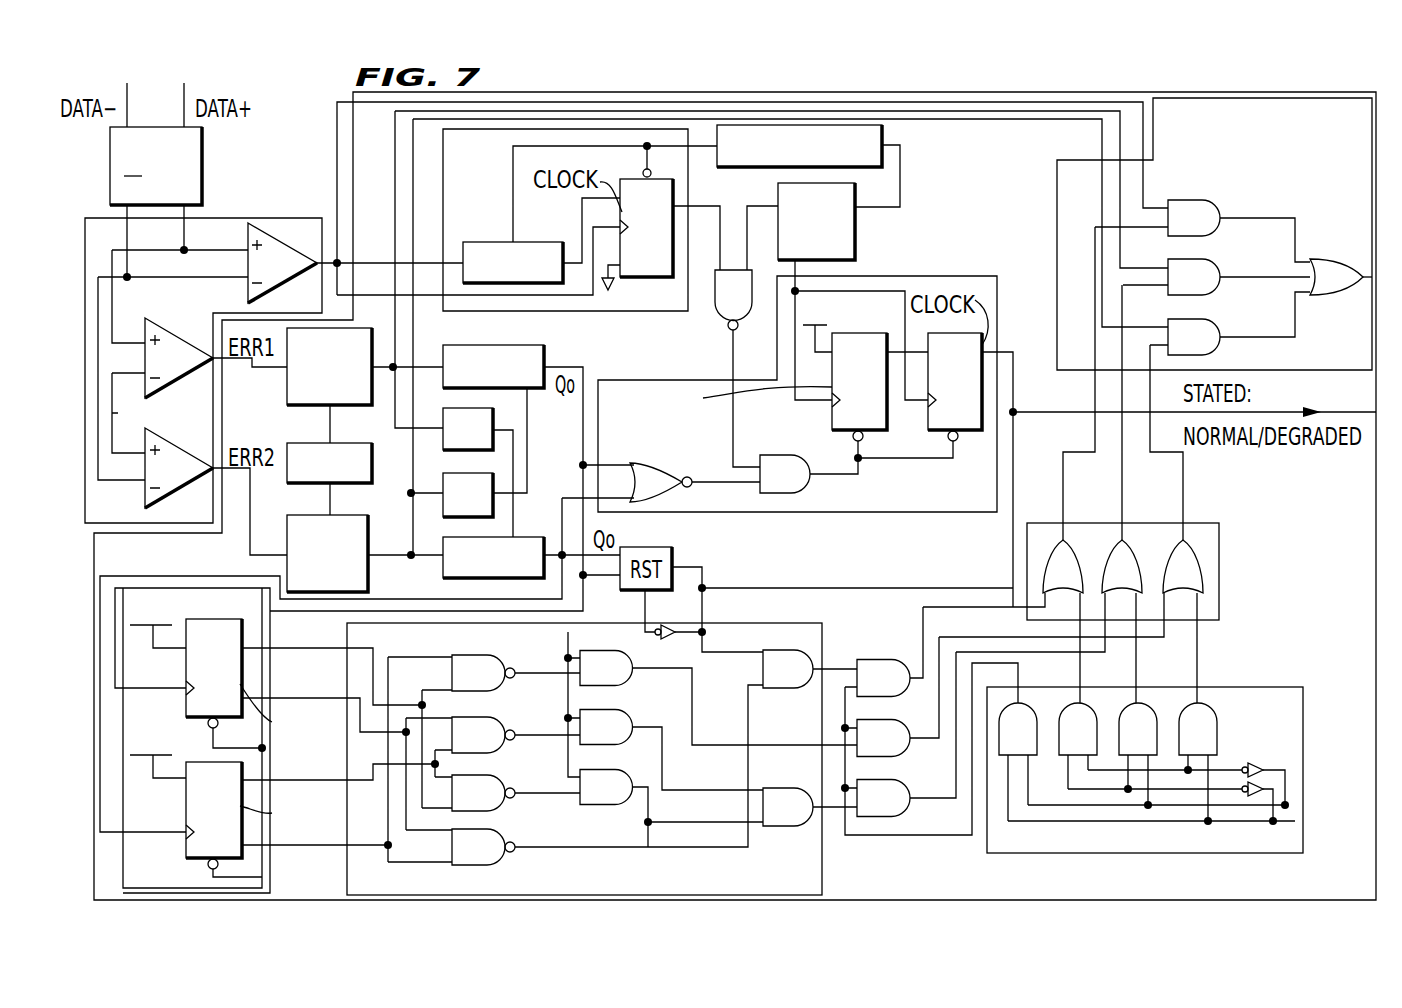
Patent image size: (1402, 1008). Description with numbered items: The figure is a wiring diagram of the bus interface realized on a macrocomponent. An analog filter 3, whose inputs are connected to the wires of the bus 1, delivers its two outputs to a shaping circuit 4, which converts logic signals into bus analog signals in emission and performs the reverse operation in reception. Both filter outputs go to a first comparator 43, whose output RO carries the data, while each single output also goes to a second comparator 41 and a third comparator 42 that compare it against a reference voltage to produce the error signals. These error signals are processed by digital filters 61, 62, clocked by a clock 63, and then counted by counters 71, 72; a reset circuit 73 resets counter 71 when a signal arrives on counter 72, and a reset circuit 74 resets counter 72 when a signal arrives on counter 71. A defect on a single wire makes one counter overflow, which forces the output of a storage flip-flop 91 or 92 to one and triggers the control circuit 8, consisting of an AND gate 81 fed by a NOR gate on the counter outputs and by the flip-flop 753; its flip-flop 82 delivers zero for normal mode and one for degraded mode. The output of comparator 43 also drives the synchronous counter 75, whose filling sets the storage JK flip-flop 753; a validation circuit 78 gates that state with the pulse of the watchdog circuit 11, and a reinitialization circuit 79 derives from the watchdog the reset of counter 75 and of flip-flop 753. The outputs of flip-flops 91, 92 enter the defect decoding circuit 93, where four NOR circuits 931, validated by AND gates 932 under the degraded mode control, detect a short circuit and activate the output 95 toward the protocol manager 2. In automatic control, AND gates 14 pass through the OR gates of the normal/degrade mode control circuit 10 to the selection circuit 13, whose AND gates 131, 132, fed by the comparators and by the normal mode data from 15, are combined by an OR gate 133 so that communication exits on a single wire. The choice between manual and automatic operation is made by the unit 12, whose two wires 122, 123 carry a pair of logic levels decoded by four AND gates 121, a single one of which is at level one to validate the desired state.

The bus 1 is at (182, 90).
The protocol manager 2 is at (126, 90).
The analog filter 3 is at (202, 153).
The shaping circuit 4 is at (95, 535).
The second comparator 41 is at (178, 342).
The third comparator 42 is at (172, 488).
The first comparator 43 is at (278, 240).
The digital filter 61 is at (375, 350).
The digital filter 62 is at (292, 443).
The clock 63 is at (300, 515).
The counter 71 is at (545, 352).
The counter 72 is at (442, 560).
The reset circuit 73 is at (495, 506).
The reset circuit 74 is at (496, 434).
The counter 75 is at (503, 242).
The storage JK flip-flop 753 is at (650, 278).
The validation circuit 78 is at (726, 333).
The reinitialization circuit 79 is at (882, 134).
The control circuit 8 is at (827, 512).
The AND gate 81 is at (612, 466).
The flip-flop 82 is at (832, 418).
The normal/degrade mode control circuit 10 is at (1020, 553).
The watchdog circuit 11 is at (855, 232).
The unit 12 is at (1290, 686).
The AND gate 121 is at (1075, 703).
The wire 122 is at (1287, 803).
The wire 123 is at (1295, 821).
The selection circuit 13 is at (1057, 195).
The AND gate 131 is at (1218, 322).
The AND gate 132 is at (1195, 200).
The OR gate 133 is at (1330, 262).
The AND gate 14 is at (908, 747).
The normal mode output 15 is at (1025, 565).
The storage flip-flop 91 is at (186, 660).
The storage flip-flop 92 is at (186, 800).
The defect decoding circuit 93 is at (347, 878).
The NOR circuit 931 is at (505, 718).
The AND gate 932 is at (627, 770).
The output 95 is at (831, 852).